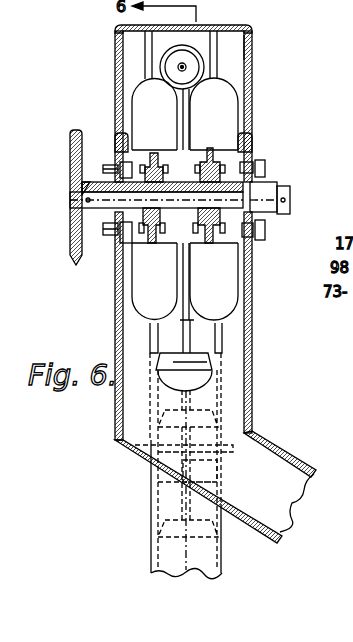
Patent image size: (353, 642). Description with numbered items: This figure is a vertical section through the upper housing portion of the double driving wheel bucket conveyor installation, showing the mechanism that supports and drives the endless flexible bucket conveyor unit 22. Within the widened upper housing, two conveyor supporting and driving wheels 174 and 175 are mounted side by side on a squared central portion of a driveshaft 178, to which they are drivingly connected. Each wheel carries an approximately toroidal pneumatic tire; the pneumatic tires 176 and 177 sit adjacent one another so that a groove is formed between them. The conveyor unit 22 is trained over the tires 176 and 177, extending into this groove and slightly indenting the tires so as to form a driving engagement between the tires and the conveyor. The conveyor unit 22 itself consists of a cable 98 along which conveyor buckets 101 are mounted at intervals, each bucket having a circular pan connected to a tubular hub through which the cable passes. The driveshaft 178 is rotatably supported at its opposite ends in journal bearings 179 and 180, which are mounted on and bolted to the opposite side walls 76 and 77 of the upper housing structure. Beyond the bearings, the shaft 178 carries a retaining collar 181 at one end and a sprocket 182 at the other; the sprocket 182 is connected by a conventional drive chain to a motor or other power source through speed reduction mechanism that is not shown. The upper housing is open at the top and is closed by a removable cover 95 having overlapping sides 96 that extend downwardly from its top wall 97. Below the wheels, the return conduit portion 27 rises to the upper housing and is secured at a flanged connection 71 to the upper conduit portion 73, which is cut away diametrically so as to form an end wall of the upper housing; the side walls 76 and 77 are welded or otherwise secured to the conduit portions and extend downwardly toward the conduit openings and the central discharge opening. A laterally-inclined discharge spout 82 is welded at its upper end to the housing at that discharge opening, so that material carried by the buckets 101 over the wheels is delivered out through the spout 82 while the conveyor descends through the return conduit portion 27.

The endless flexible bucket conveyor unit 22 is at (187, 62).
The return conduit portion 27 is at (151, 523).
The flanged connection 71 is at (233, 452).
The upper conduit portion 73 is at (222, 405).
The side wall 76 is at (254, 328).
The side wall 77 is at (117, 329).
The discharge spout 82 is at (279, 453).
The removable cover 95 is at (252, 42).
The overlapping sides 96 is at (115, 56).
The top wall 97 is at (240, 29).
The cable 98 is at (178, 67).
The conveyor bucket 101 is at (226, 56).
The conveyor supporting and driving wheel 174 is at (225, 116).
The conveyor supporting and driving wheel 175 is at (142, 104).
The pneumatic tire 176 is at (240, 75).
The pneumatic tire 177 is at (122, 81).
The driveshaft 178 is at (167, 195).
The journal bearing 179 is at (272, 181).
The journal bearing 180 is at (102, 188).
The retaining collar 181 is at (290, 188).
The sprocket 182 is at (73, 160).